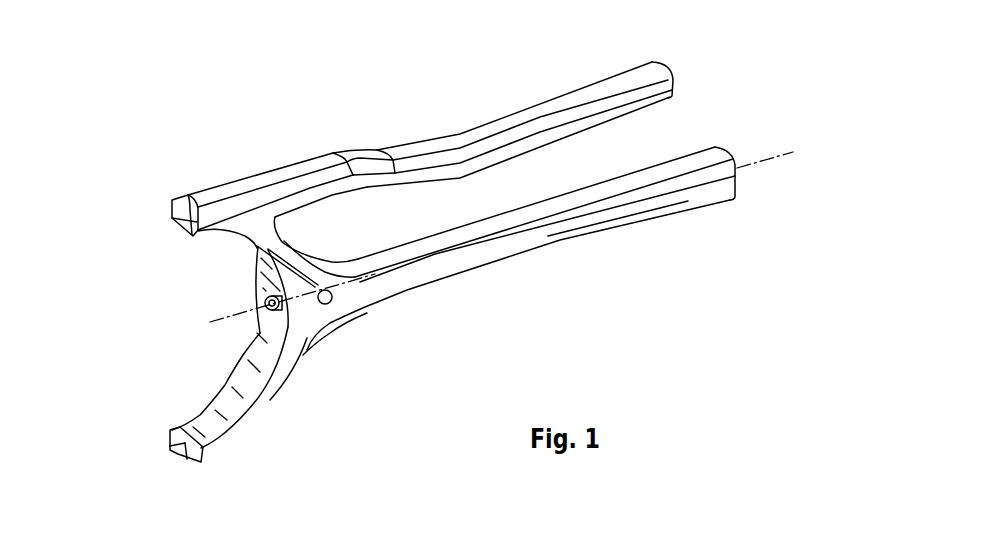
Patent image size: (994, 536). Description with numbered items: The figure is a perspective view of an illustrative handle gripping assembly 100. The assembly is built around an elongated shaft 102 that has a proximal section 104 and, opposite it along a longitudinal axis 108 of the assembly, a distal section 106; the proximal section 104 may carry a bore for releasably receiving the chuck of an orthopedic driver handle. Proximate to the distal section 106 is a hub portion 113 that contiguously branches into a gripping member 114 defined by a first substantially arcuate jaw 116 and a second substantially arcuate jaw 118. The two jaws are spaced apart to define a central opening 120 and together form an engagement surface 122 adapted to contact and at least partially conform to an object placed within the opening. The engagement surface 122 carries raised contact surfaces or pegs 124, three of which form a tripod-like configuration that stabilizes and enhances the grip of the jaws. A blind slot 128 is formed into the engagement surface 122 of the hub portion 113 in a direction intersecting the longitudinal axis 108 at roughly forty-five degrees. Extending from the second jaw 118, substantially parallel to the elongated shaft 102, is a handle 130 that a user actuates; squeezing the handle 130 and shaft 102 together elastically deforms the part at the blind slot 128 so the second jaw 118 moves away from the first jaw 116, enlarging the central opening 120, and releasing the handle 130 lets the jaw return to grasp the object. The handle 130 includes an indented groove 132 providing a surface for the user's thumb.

The handle gripping assembly 100 is at (141, 117).
The elongated shaft 102 is at (543, 243).
The proximal section 104 is at (707, 137).
The distal section 106 is at (341, 347).
The longitudinal axis 108 is at (780, 155).
The hub portion 113 is at (313, 340).
The gripping member 114 is at (134, 214).
The first substantially arcuate jaw 116 is at (237, 430).
The second substantially arcuate jaw 118 is at (257, 187).
The central opening 120 is at (176, 313).
The engagement surface 122 is at (242, 232).
The raised contact surfaces 124 is at (180, 222).
The blind slot 128 is at (345, 303).
The handle 130 is at (508, 118).
The indented groove 132 is at (362, 152).